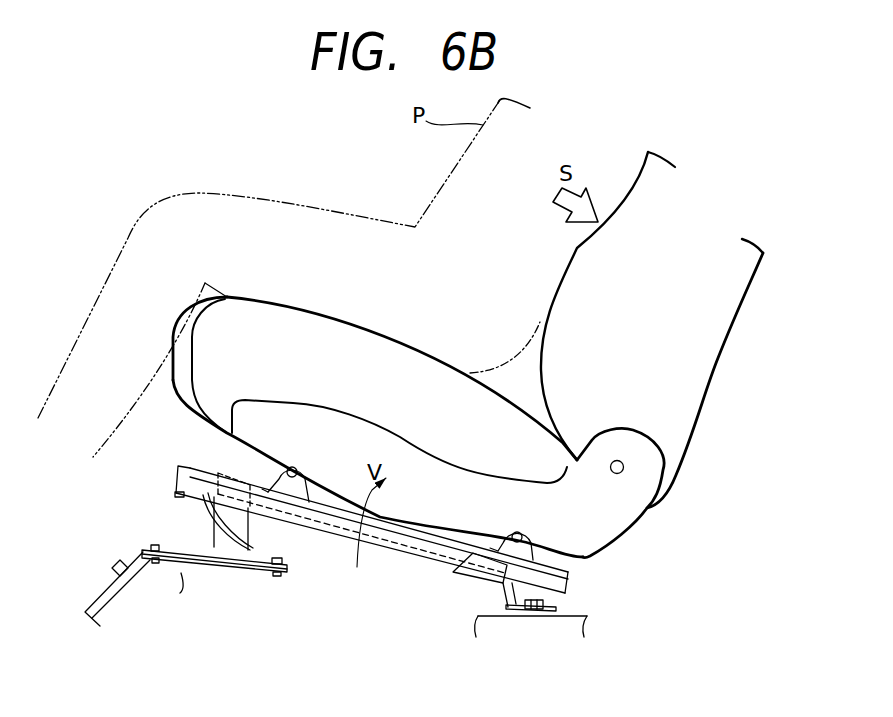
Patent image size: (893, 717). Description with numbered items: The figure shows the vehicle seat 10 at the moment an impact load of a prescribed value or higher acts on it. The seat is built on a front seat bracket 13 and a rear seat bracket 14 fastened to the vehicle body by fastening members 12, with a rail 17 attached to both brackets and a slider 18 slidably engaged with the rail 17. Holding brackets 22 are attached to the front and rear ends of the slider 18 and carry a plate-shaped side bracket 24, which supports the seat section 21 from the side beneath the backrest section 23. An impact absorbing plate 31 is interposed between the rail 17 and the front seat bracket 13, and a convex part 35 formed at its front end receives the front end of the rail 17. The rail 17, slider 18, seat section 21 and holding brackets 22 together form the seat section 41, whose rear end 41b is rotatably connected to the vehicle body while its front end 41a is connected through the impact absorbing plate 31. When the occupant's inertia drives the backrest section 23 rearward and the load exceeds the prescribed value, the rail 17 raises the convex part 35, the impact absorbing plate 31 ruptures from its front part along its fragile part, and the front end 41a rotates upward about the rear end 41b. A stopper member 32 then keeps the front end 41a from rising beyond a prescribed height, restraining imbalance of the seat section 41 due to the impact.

The vehicle seat 10 is at (685, 488).
The fastening member 12 is at (117, 566).
The front seat bracket 13 is at (112, 582).
The rear seat bracket 14 is at (587, 616).
The rail 17 is at (207, 467).
The slider 18 is at (568, 573).
The seat section 21 is at (440, 385).
The holding bracket 22 is at (308, 484).
The backrest section 23 is at (723, 305).
The side bracket 24 is at (615, 522).
The impact absorbing plate 31 is at (173, 483).
The stopper member 32 is at (217, 542).
The convex part 35 is at (177, 470).
The seat section 41 is at (388, 413).
The front end of the seat section 41a is at (297, 450).
The rear end of the seat section 41b is at (531, 516).